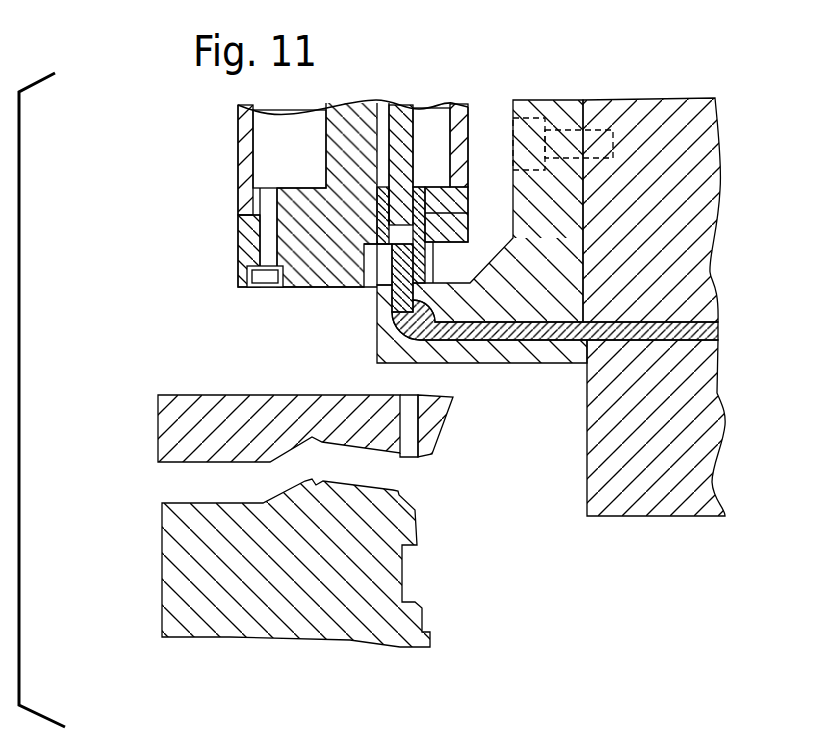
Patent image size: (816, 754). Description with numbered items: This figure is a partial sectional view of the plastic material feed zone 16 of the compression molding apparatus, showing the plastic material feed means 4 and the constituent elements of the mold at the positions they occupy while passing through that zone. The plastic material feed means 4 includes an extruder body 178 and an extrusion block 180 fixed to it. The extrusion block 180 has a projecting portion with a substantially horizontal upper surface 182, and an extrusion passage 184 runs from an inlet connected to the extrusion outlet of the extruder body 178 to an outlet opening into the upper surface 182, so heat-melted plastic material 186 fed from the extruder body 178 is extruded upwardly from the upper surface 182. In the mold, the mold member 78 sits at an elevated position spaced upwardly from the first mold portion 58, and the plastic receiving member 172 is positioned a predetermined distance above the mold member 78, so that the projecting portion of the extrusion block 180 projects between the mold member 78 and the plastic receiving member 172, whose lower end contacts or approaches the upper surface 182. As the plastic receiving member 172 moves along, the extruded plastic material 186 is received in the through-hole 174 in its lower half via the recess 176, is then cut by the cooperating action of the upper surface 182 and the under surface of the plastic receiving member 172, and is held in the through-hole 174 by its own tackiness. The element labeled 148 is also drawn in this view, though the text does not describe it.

The plastic material feed means 4 is at (637, 77).
The plastic material feed zone 16 is at (147, 270).
The first mold portion 58 is at (156, 543).
The mold member 78 is at (156, 432).
The retainer box 148 is at (236, 270).
The plastic receiving member 172 is at (434, 268).
The through-hole 174 is at (423, 194).
The recess 176 is at (400, 305).
The extruder body 178 is at (637, 520).
The extrusion block 180 is at (514, 358).
The upper surface 182 is at (373, 283).
The extrusion passage 184 is at (469, 343).
The plastic material 186 is at (402, 233).